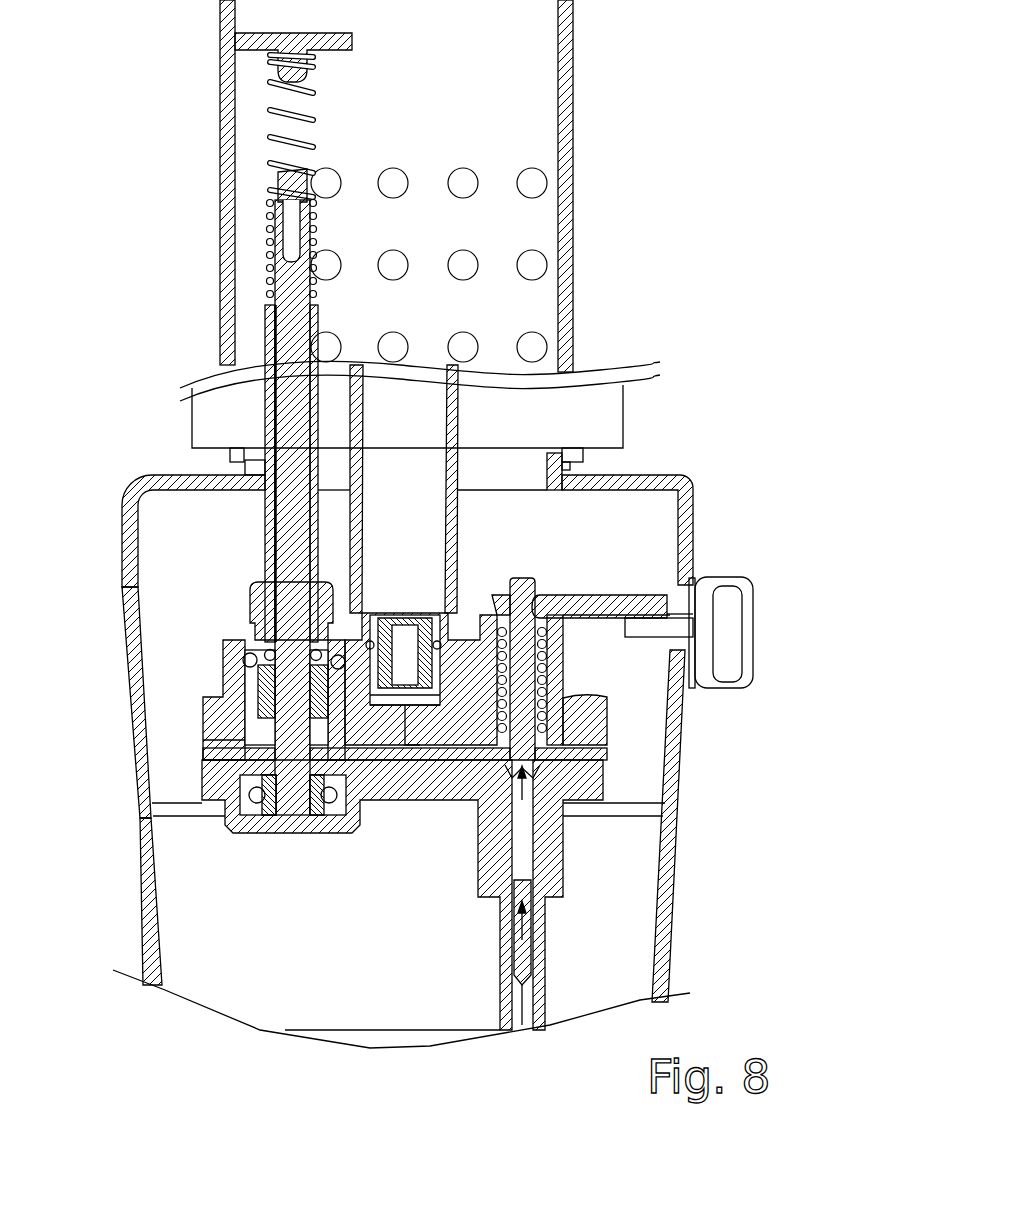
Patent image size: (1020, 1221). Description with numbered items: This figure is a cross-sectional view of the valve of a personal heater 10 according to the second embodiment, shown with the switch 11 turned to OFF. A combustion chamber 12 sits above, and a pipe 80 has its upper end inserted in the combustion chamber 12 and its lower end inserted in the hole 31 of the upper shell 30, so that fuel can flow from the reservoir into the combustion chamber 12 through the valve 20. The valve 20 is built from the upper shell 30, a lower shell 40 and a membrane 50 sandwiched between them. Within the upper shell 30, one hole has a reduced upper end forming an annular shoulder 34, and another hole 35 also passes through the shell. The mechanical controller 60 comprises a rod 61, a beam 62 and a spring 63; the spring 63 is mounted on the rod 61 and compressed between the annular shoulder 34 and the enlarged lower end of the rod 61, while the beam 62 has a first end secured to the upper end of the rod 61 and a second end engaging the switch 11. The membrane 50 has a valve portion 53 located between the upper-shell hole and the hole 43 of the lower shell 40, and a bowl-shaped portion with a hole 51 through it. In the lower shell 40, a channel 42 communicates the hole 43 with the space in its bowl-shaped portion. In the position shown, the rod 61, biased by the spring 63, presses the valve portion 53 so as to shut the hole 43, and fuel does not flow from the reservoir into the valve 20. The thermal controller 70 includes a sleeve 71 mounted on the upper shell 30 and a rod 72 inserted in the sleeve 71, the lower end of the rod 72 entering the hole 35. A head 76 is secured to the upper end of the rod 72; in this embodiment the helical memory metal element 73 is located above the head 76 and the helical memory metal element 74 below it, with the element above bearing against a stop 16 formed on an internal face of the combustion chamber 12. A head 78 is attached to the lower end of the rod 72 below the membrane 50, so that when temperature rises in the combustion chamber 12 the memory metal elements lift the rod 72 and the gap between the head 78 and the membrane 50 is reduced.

The personal heater 10 is at (448, 925).
The switch 11 is at (756, 632).
The combustion chamber 12 is at (434, 186).
The stop 16 is at (207, 58).
The valve 20 is at (375, 727).
The upper shell 30 is at (202, 700).
The hole 31 is at (421, 749).
The annular shoulder 34 is at (545, 637).
The hole 35 is at (152, 729).
The lower shell 40 is at (331, 895).
The channel 42 is at (403, 750).
The hole 43 is at (647, 785).
The membrane 50 is at (333, 753).
The hole 51 is at (295, 775).
The valve portion 53 is at (483, 895).
The mechanical controller 60 is at (519, 623).
The rod 61 is at (668, 720).
The beam 62 is at (670, 579).
The spring 63 is at (676, 667).
The thermal controller 70 is at (195, 455).
The sleeve 71 is at (191, 473).
The rod 72 is at (199, 580).
The helical memory metal element 73 is at (193, 176).
The helical memory metal element 74 is at (186, 507).
The head 76 is at (188, 195).
The head 78 is at (292, 830).
The pipe 80 is at (349, 489).